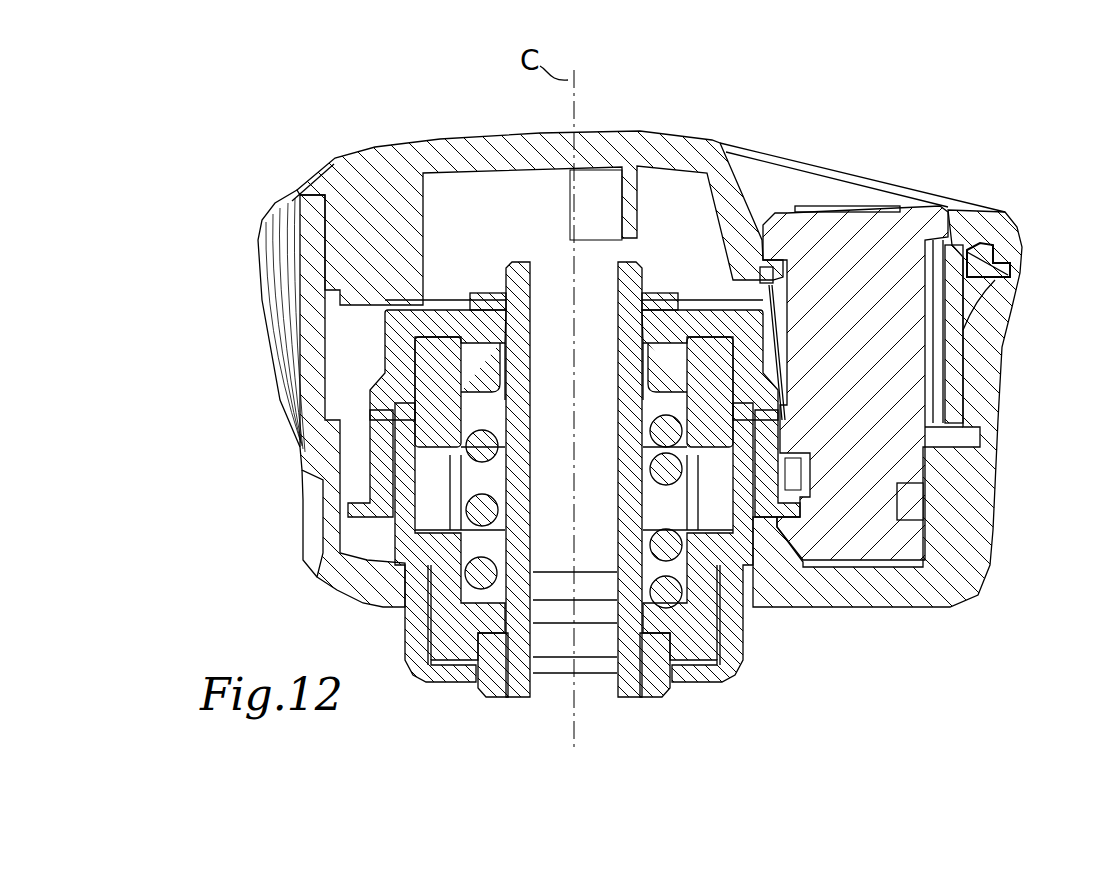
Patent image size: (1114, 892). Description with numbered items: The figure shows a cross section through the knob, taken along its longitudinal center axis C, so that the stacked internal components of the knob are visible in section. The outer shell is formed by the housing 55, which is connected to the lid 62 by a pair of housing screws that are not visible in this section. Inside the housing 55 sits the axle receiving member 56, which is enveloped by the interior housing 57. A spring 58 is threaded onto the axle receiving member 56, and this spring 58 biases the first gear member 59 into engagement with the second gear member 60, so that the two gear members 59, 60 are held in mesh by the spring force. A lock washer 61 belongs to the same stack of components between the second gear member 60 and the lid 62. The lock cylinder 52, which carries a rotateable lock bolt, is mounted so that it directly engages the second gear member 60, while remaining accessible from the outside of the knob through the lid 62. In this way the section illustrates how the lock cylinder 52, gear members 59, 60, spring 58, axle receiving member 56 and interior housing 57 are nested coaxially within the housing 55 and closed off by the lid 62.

The lock cylinder 52 is at (862, 228).
The housing 55 is at (960, 525).
The axle receiving member 56 is at (640, 685).
The interior housing 57 is at (693, 623).
The spring 58 is at (662, 468).
The first gear member 59 is at (665, 392).
The second gear member 60 is at (688, 320).
The lock washer 61 is at (652, 292).
The lid 62 is at (640, 148).